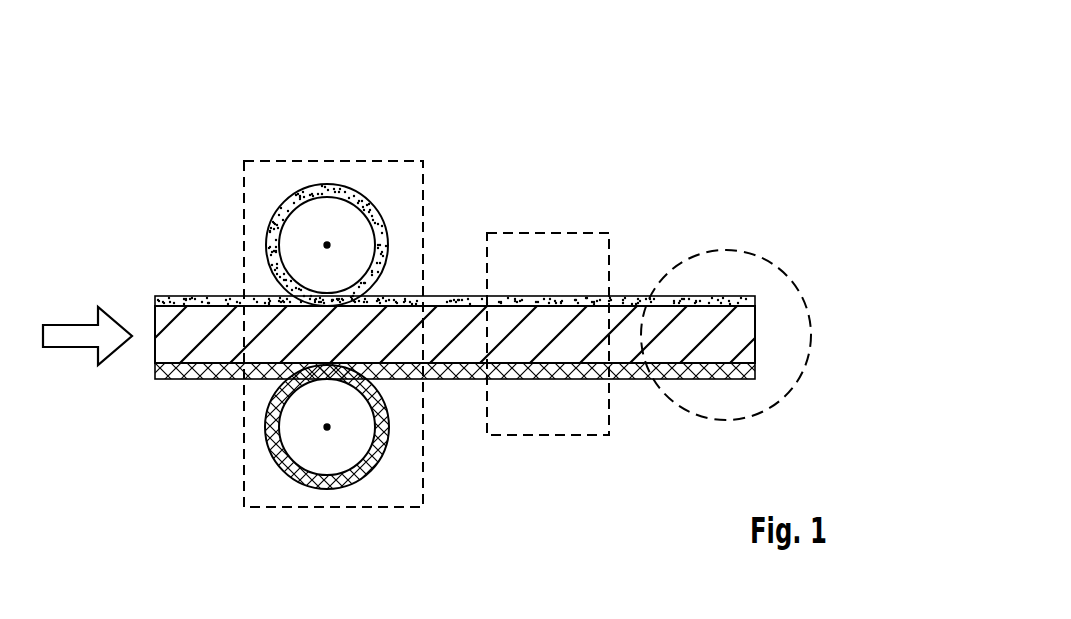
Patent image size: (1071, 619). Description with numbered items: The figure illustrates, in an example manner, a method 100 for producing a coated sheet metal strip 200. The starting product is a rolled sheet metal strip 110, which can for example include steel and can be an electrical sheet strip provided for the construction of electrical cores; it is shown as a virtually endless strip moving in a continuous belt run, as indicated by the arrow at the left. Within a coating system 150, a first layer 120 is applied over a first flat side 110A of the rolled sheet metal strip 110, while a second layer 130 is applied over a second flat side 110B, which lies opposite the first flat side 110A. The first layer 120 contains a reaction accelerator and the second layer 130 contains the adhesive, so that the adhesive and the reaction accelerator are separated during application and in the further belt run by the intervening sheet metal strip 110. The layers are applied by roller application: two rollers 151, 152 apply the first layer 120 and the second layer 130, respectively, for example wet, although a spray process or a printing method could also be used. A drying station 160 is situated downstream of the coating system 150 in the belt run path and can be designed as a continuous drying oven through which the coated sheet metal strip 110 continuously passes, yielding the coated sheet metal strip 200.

The method 100 is at (653, 73).
The rolled sheet metal strip 110 is at (167, 315).
The first flat side 110A is at (227, 305).
The second flat side 110B is at (222, 367).
The first layer 120 is at (455, 300).
The second layer 130 is at (462, 380).
The coating system 150 is at (308, 160).
The roller 151 is at (362, 202).
The roller 152 is at (320, 490).
The drying station 160 is at (570, 233).
The coated sheet metal strip 200 is at (762, 250).